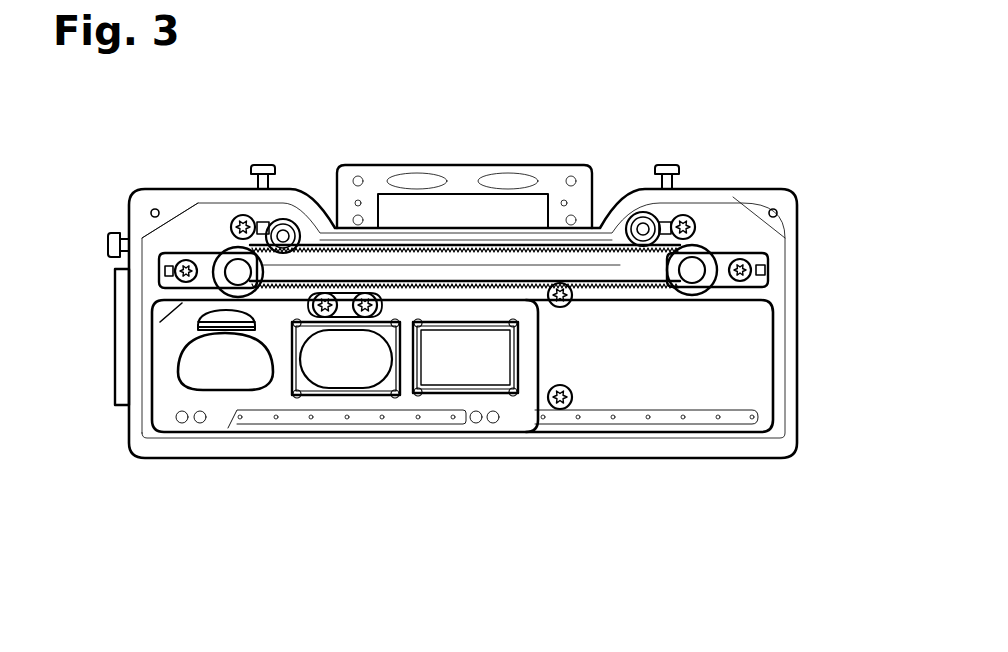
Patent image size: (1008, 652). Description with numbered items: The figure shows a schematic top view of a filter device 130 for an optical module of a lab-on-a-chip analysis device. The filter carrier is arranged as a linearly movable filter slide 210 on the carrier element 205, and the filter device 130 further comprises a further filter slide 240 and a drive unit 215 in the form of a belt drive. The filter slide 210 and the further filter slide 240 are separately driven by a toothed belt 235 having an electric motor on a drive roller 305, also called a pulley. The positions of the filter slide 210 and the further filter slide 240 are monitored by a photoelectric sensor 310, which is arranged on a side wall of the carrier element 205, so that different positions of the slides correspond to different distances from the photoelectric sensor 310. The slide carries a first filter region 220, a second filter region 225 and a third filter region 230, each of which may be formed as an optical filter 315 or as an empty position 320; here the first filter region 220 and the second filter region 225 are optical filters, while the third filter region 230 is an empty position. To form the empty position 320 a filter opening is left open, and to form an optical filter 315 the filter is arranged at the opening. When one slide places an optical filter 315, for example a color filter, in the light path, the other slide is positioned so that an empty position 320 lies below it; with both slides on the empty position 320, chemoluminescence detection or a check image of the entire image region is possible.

The filter device 130 is at (141, 170).
The carrier element 205 is at (720, 460).
The filter slide 210 is at (281, 380).
The drive unit 215 is at (779, 266).
The first filter region 220 is at (500, 392).
The second filter region 225 is at (350, 399).
The third filter region 230 is at (225, 394).
The toothed belt 235 is at (610, 285).
The further filter slide 240 is at (162, 317).
The drive roller 305 is at (692, 268).
The photoelectric sensor 310 is at (109, 391).
The optical filter 315 is at (464, 360).
The empty position 320 is at (211, 360).